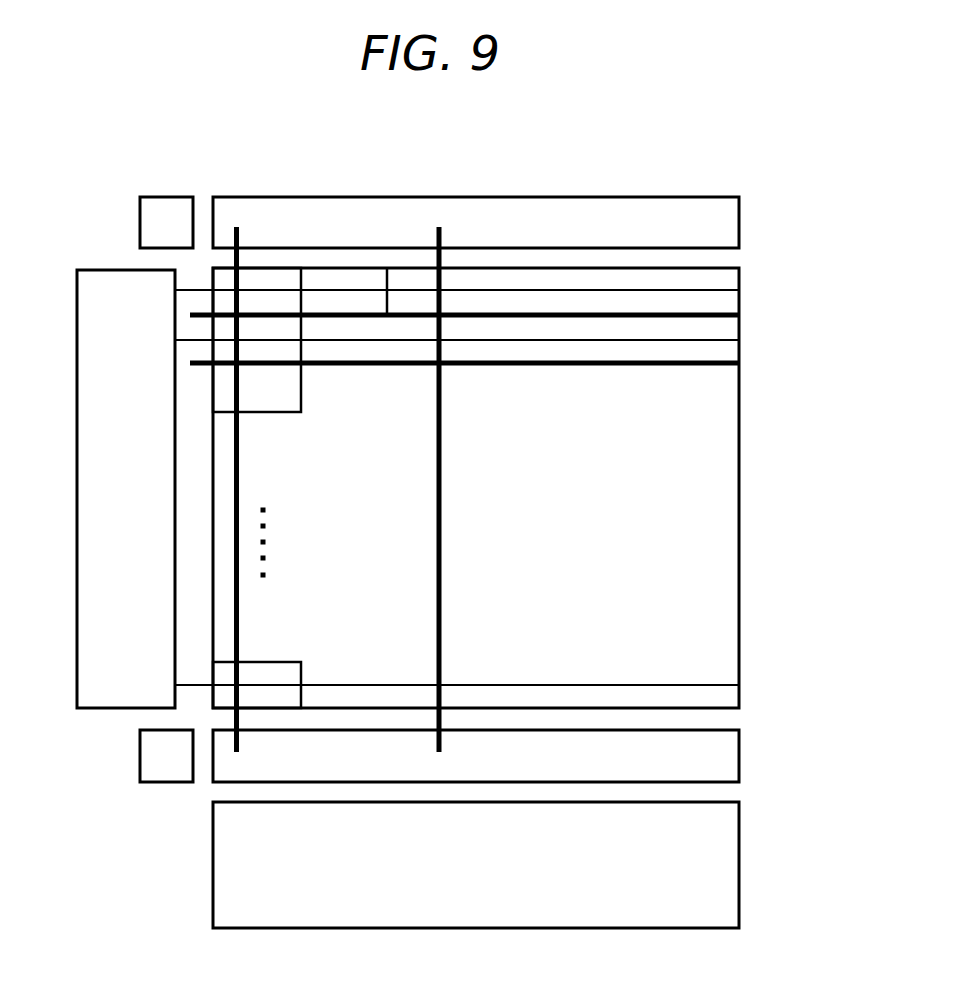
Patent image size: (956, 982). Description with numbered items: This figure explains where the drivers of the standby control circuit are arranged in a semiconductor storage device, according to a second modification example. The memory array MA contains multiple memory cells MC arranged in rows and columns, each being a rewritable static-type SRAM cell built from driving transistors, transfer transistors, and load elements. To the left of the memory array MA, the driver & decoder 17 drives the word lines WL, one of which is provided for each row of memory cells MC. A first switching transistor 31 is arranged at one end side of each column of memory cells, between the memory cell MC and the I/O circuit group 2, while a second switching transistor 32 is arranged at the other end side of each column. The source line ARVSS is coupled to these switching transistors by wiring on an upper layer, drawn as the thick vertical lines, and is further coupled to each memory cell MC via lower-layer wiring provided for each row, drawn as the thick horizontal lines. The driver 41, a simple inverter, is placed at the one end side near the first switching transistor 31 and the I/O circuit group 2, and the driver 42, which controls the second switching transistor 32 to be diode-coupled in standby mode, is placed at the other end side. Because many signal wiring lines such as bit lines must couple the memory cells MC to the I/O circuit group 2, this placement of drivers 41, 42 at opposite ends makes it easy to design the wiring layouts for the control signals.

The driver 42 is at (138, 220).
The second switching transistor 32 is at (740, 218).
The driver & decoder 17 is at (77, 648).
The memory array MA is at (740, 492).
The word line WL is at (721, 291).
The source line ARVSS is at (721, 317).
The memory cell MC is at (270, 662).
The driver 41 is at (138, 752).
The first switching transistor 31 is at (740, 755).
The I/O circuit group 2 is at (740, 865).